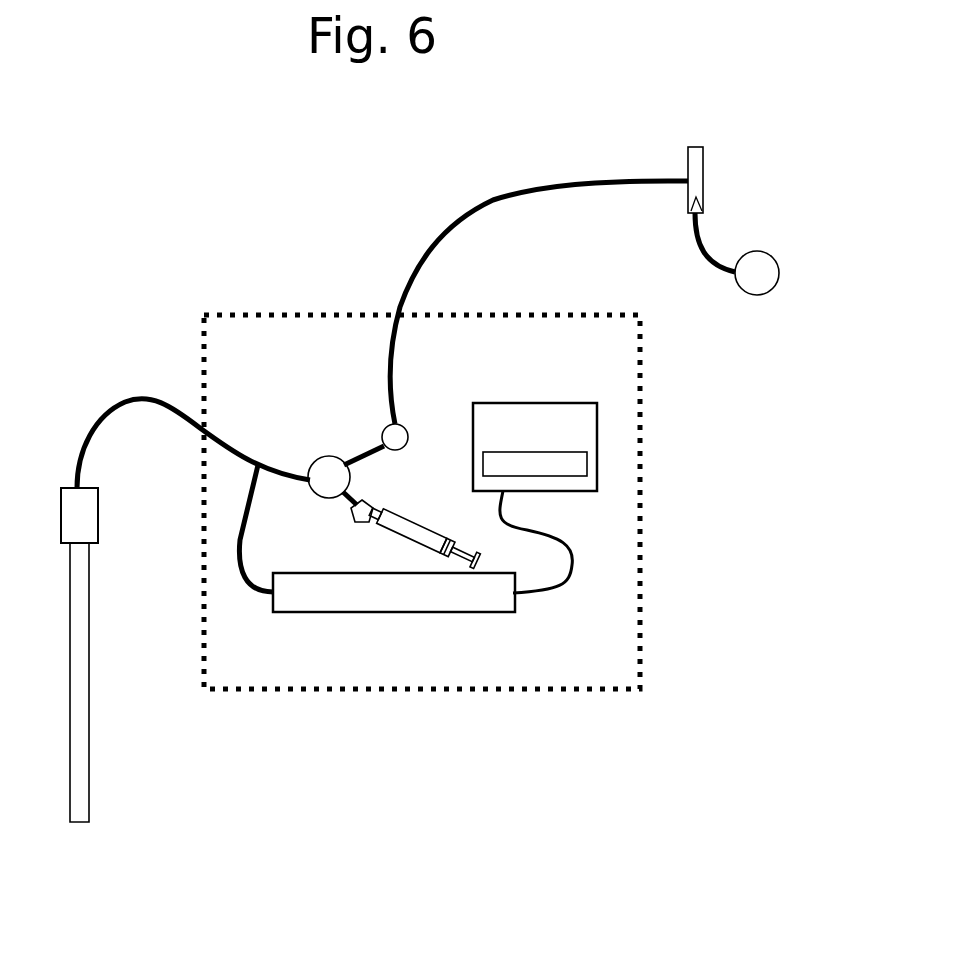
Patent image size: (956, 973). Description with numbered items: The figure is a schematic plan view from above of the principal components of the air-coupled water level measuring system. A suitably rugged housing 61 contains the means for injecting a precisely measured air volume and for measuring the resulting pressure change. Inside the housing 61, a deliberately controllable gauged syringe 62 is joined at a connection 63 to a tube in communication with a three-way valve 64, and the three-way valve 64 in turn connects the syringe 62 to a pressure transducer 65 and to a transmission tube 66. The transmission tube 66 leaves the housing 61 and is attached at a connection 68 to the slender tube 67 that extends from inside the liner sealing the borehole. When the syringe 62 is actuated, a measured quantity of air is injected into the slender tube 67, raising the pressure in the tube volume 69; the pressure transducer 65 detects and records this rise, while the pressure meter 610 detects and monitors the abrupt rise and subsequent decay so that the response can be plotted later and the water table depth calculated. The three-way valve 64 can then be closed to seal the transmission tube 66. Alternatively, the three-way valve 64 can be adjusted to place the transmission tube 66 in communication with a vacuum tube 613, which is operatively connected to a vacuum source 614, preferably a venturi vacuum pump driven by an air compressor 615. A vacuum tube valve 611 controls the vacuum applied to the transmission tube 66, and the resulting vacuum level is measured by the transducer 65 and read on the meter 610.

The housing 61 is at (268, 313).
The gauged syringe 62 is at (410, 532).
The connection 63 is at (370, 500).
The three-way valve 64 is at (328, 465).
The pressure transducer 65 is at (455, 597).
The transmission tube 66 is at (152, 395).
The slender tube 67 is at (85, 645).
The connection 68 is at (93, 513).
The tube volume 69 is at (80, 735).
The pressure meter 610 is at (535, 428).
The vacuum tube valve 611 is at (390, 435).
The vacuum tube 613 is at (480, 205).
The vacuum source 614 is at (703, 183).
The air compressor 615 is at (762, 283).